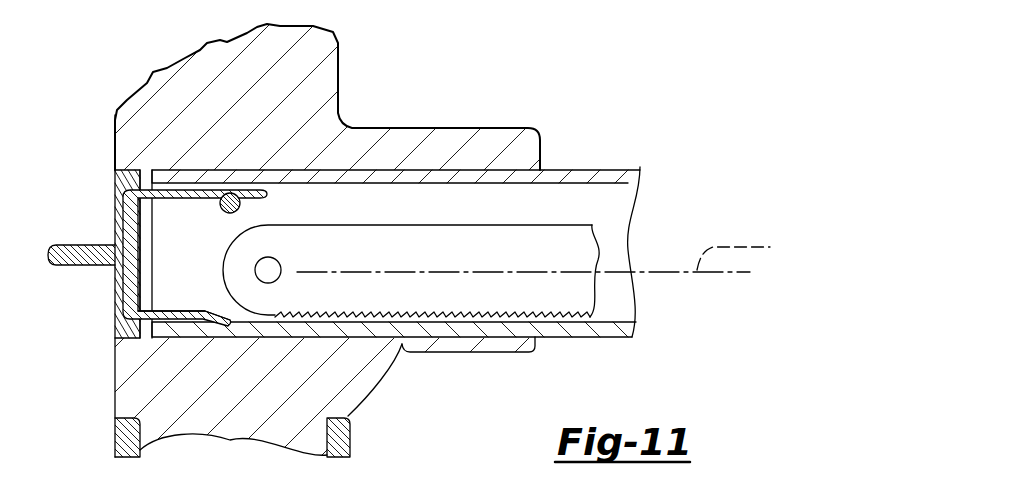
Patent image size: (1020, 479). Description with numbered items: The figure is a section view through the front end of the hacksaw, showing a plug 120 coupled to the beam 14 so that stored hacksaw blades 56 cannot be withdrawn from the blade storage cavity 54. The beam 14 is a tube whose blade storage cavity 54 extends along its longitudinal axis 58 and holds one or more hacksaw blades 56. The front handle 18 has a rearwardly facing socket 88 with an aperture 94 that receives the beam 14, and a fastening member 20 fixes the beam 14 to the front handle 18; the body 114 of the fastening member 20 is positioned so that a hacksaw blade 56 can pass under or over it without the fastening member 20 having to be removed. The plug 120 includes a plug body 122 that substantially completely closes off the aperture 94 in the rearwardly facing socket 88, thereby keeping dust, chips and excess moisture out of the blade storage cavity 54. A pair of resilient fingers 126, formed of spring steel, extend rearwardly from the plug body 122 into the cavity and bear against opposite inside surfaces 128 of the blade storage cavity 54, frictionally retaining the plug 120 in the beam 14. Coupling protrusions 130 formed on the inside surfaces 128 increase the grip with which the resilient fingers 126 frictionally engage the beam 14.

The beam 14 is at (618, 168).
The front handle 18 is at (340, 406).
The fastening member 20 is at (243, 218).
The blade storage cavity 54 is at (620, 200).
The hacksaw blades 56 is at (595, 300).
The longitudinal axis 58 is at (773, 237).
The rearwardly facing socket 88 is at (537, 341).
The aperture 94 is at (403, 340).
The body 114 is at (218, 206).
The plug 120 is at (112, 227).
The plug body 122 is at (117, 302).
The resilient fingers 126 is at (183, 196).
The inside surfaces 128 is at (522, 200).
The coupling protrusions 130 is at (224, 316).